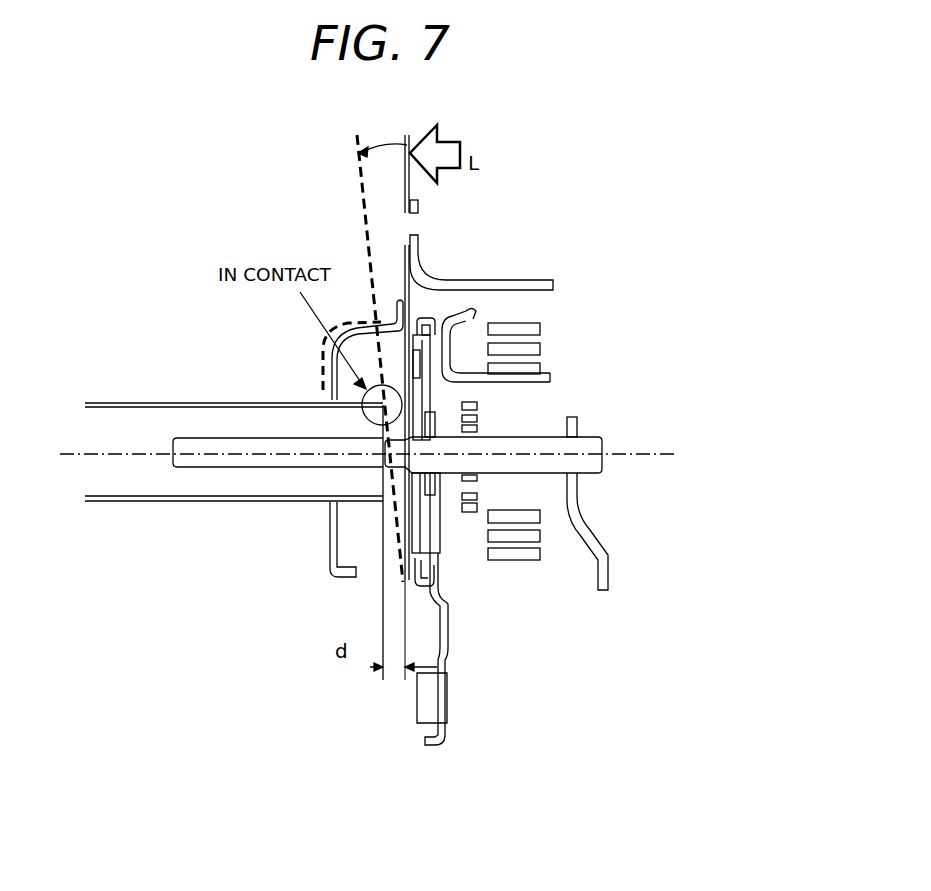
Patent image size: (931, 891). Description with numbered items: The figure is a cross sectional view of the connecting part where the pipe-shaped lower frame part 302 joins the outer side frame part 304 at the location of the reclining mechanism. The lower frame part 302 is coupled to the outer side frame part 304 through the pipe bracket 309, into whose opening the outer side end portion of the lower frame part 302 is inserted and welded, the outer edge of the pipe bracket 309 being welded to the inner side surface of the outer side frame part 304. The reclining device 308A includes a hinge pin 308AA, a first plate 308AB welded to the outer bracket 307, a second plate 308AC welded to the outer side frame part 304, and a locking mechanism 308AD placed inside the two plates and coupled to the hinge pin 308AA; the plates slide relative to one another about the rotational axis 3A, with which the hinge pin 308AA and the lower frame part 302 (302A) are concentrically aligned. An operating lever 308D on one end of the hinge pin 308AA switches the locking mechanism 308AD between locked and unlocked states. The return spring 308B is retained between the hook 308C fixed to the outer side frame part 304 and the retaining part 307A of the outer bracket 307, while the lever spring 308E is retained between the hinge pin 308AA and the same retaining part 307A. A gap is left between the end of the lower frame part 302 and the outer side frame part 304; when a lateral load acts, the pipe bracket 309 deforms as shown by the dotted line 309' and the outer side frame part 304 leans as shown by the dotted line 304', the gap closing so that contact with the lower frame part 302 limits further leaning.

The lower frame part 302 is at (125, 402).
The rotational axis 3A is at (278, 403).
The rod 302A is at (207, 450).
The outer side frame part 304 is at (400, 407).
The dotted line showing leaned outer side frame part 304' is at (330, 407).
The pipe bracket 309 is at (318, 441).
The dotted line showing deformed pipe bracket 309' is at (290, 344).
The outer bracket 307 is at (453, 690).
The retaining part 307A is at (550, 378).
The reclining device 308A is at (612, 446).
The hinge pin 308AA is at (540, 478).
The first plate 308AB is at (442, 522).
The second plate 308AC is at (413, 537).
The locking mechanism 308AD is at (427, 423).
The return spring 308B is at (545, 323).
The hook 308C is at (535, 282).
The operating lever 308D is at (607, 552).
The lever spring 308E is at (477, 404).